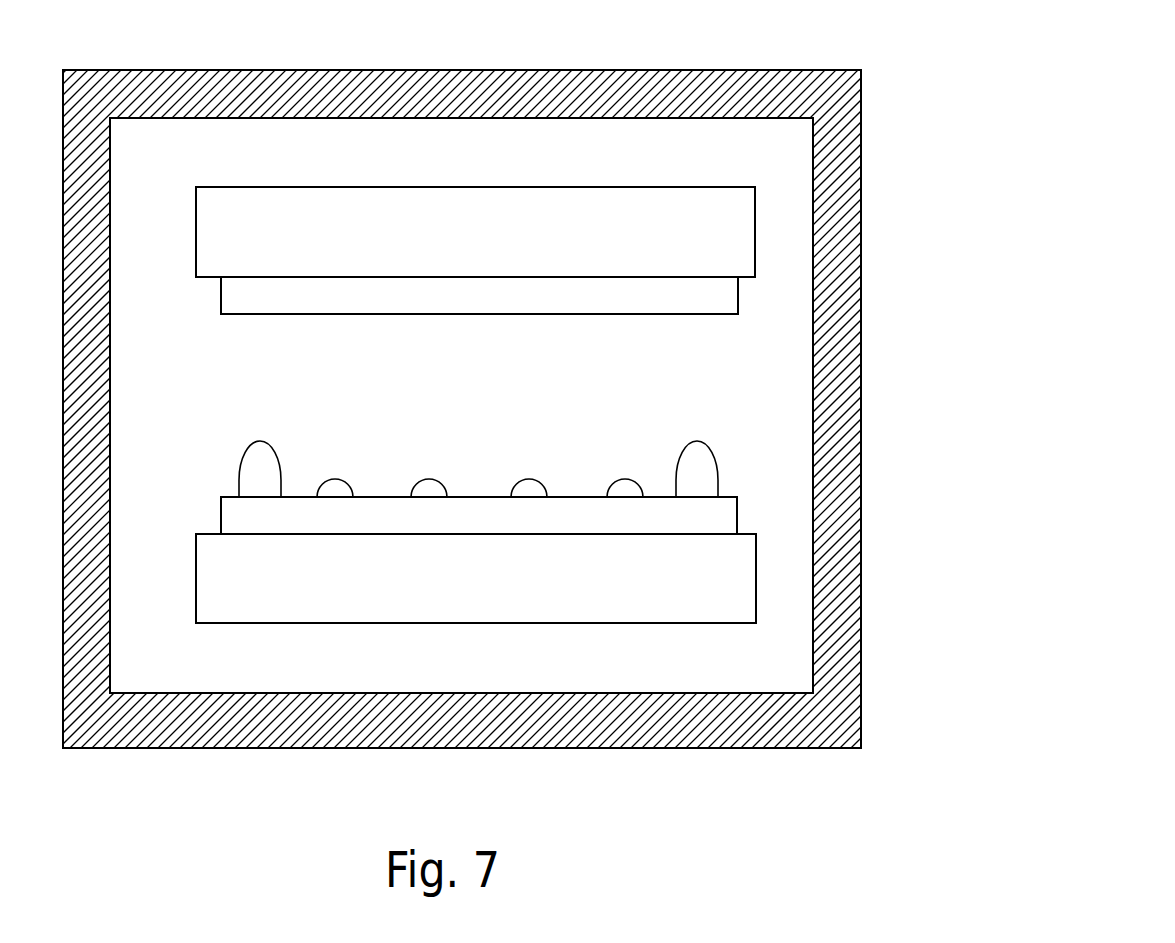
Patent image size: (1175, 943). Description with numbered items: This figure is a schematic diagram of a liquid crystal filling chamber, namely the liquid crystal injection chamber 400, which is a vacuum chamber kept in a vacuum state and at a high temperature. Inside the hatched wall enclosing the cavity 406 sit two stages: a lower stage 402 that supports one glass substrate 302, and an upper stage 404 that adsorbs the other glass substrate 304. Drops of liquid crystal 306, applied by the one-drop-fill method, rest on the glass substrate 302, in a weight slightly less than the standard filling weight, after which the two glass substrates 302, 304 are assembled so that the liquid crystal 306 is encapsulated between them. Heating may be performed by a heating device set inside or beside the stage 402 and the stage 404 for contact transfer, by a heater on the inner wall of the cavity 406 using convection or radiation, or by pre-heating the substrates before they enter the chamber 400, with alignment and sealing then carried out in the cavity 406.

The liquid crystal injection chamber 400 is at (587, 417).
The stage 402 is at (756, 578).
The stage 404 is at (755, 238).
The cavity 406 is at (861, 408).
The glass substrate 302 is at (737, 513).
The glass substrate 304 is at (738, 303).
The liquid crystal 306 is at (332, 488).